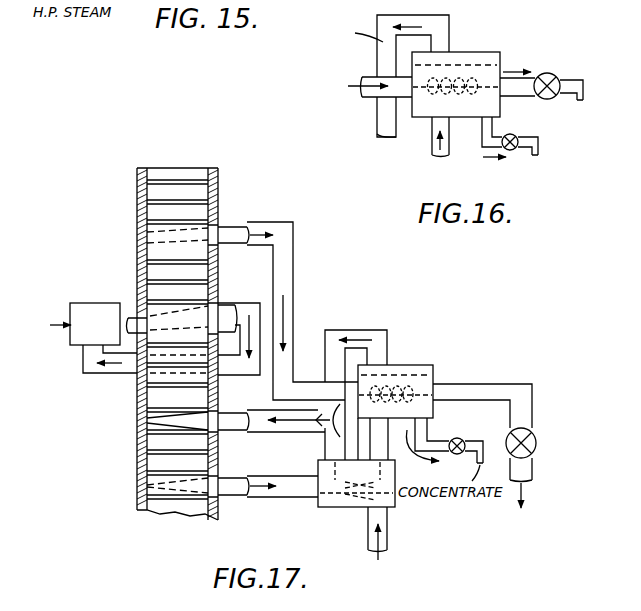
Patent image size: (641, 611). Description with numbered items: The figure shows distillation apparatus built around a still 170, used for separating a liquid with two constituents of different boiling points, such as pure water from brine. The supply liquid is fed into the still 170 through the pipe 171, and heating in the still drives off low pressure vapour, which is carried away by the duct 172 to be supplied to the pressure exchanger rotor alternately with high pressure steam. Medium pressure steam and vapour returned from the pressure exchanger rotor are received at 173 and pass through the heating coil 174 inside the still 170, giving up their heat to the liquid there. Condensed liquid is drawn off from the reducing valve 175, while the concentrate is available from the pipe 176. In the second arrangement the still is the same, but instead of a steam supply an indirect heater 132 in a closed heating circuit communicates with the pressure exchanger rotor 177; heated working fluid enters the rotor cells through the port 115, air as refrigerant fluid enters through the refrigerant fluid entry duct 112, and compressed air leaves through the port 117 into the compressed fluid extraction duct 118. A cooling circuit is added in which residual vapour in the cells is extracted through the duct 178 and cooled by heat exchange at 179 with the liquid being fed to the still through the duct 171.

In FIG. 17, the refrigerant fluid entry duct 112 is at (236, 418).
In FIG. 17, the port 115 is at (132, 315).
In FIG. 17, the port 117 is at (219, 230).
In FIG. 17, the compressed fluid extraction duct 118 is at (288, 222).
In FIG. 17, the indirect heater 132 is at (108, 337).
In FIG. 16, the still 170 is at (497, 52).
In FIG. 17, the still 170 is at (437, 368).
In FIG. 16, the pipe 171 is at (432, 133).
In FIG. 17, the pipe 171 is at (375, 437).
In FIG. 16, the duct 172 is at (380, 120).
In FIG. 17, the duct 172 is at (348, 330).
In FIG. 16, the inlet for medium pressure steam and vapour 173 is at (367, 77).
In FIG. 16, the heating coil 174 is at (465, 80).
In FIG. 17, the heating coil 174 is at (407, 385).
In FIG. 16, the reducing valve 175 is at (548, 73).
In FIG. 17, the reducing valve 175 is at (537, 440).
In FIG. 16, the pipe 176 is at (540, 138).
In FIG. 17, the pressure exchanger rotor 177 is at (152, 242).
In FIG. 17, the duct 178 is at (270, 498).
In FIG. 17, the heat exchanger 179 is at (355, 510).